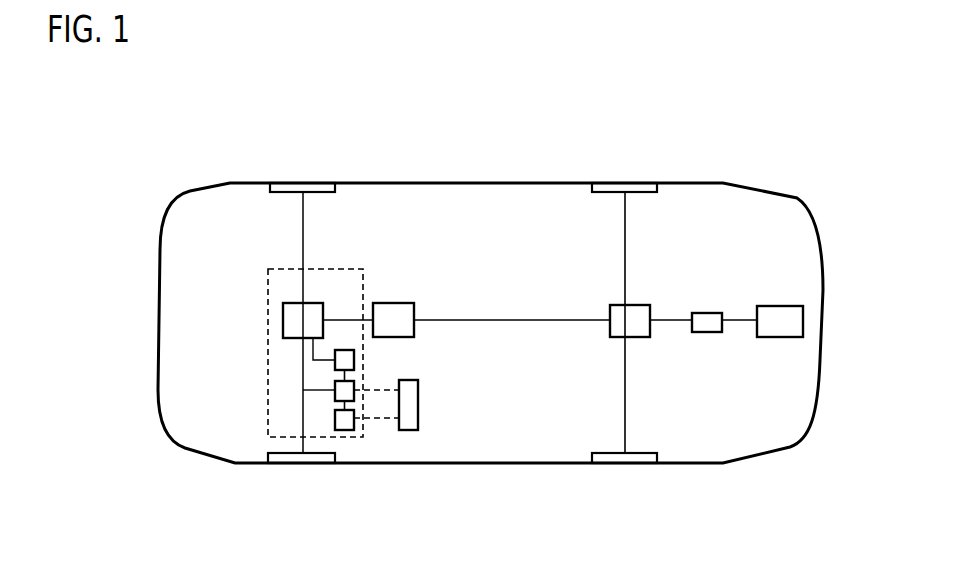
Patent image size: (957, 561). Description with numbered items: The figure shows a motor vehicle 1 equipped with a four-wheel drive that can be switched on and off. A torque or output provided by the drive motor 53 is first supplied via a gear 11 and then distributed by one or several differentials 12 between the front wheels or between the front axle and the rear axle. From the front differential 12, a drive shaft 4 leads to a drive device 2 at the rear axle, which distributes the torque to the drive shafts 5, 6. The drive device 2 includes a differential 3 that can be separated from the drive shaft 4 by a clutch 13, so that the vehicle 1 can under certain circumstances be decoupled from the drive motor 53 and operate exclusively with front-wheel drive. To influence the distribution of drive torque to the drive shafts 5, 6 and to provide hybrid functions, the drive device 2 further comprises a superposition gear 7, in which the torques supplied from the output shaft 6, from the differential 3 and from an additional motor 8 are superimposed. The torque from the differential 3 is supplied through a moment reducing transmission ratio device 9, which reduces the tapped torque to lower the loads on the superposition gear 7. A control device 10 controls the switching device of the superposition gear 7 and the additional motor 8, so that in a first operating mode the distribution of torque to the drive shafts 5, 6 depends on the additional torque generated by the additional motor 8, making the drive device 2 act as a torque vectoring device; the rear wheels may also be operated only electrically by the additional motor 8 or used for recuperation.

The motor vehicle 1 is at (586, 153).
The drive device 2 is at (358, 268).
The differential 3 is at (283, 322).
The drive shaft 4 is at (350, 320).
The drive shaft 5 is at (303, 285).
The drive shaft 6 is at (303, 380).
The superposition gear 7 is at (354, 387).
The additional motor 8 is at (344, 430).
The moment reducing transmission ratio device 9 is at (354, 358).
The control device 10 is at (418, 404).
The gear 11 is at (707, 332).
The differential 12 is at (638, 340).
The clutch 13 is at (395, 303).
The drive motor 53 is at (780, 338).